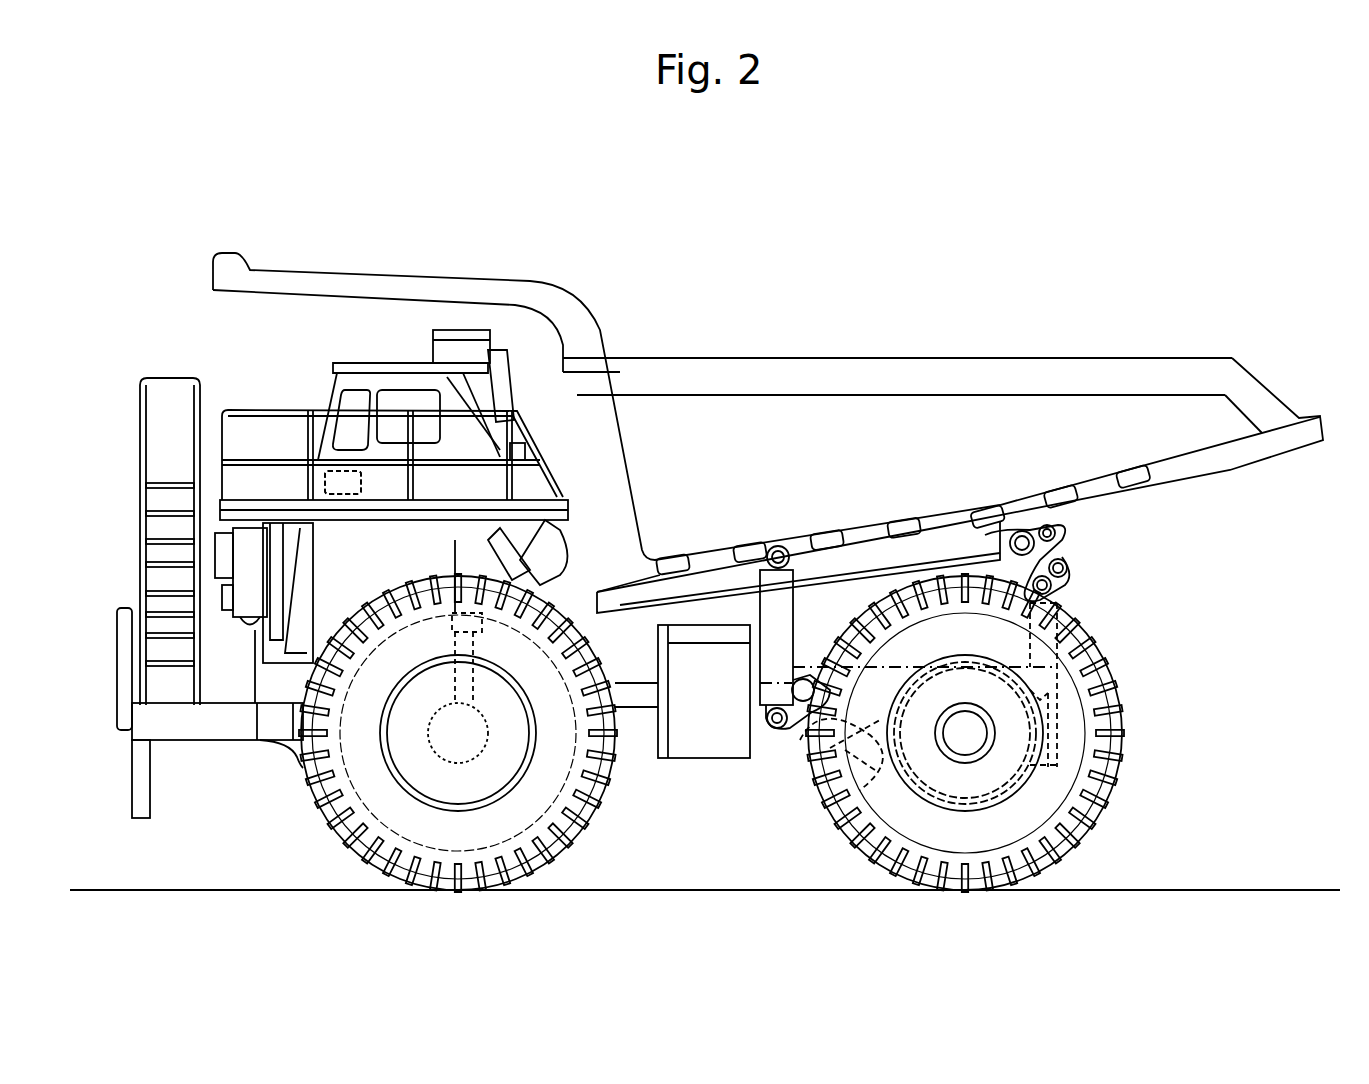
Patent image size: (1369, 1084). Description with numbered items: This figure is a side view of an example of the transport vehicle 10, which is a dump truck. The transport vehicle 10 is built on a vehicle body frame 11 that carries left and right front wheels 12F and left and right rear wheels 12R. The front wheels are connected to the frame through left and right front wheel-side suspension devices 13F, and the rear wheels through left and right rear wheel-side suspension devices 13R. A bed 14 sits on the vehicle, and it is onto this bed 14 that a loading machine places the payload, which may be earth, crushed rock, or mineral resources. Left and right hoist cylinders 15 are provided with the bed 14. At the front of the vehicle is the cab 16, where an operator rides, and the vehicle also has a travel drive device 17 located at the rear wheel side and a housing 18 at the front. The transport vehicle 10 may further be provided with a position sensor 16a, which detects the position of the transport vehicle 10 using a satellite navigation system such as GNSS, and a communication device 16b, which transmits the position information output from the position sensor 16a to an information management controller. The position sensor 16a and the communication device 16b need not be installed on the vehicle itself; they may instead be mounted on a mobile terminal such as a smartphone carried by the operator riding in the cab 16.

The transport vehicle 10 is at (1097, 224).
The vehicle body frame 11 is at (717, 593).
The front wheels 12F is at (472, 838).
The rear wheels 12R is at (995, 838).
The front wheel-side suspension devices 13F is at (528, 558).
The rear wheel-side suspension devices 13R is at (1095, 648).
The bed 14 is at (858, 372).
The hoist cylinders 15 is at (790, 617).
The cab 16 is at (373, 363).
The position sensor 16a is at (300, 468).
The communication device 16b is at (343, 482).
The travel drive device 17 is at (890, 735).
The housing 18 is at (267, 683).